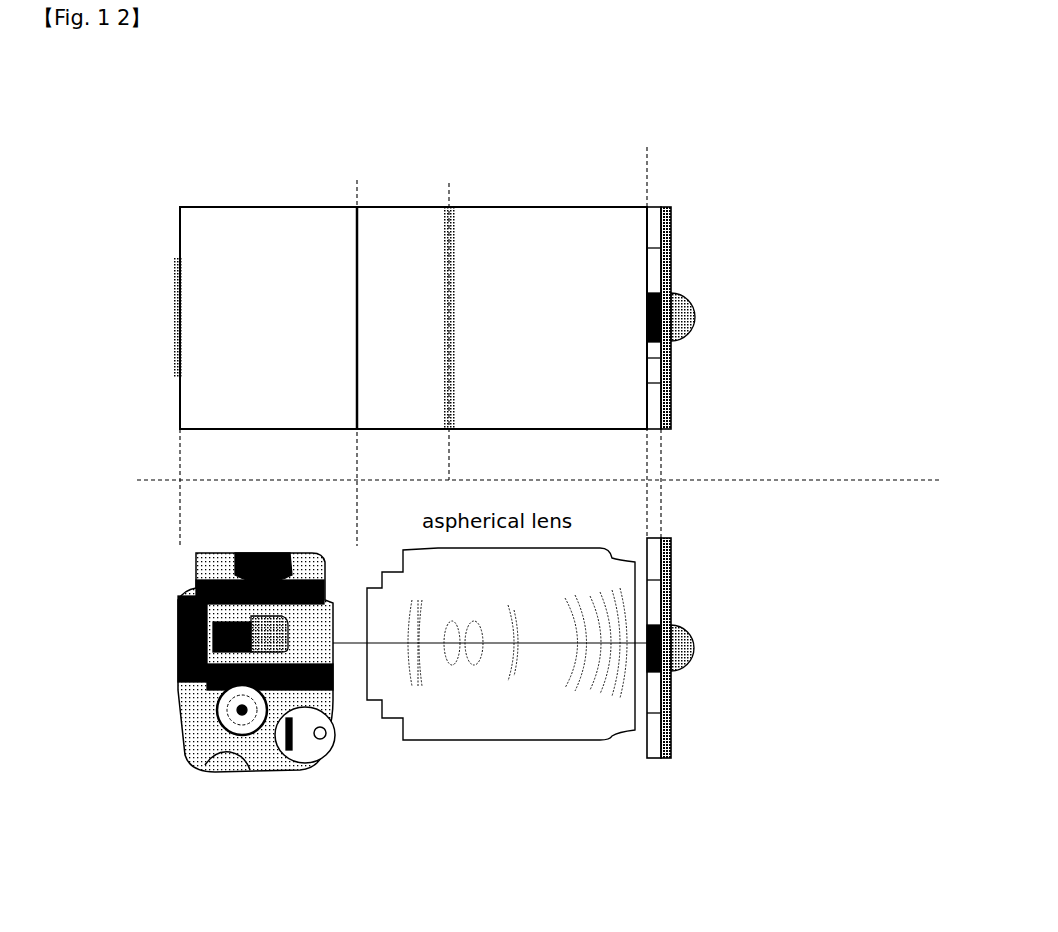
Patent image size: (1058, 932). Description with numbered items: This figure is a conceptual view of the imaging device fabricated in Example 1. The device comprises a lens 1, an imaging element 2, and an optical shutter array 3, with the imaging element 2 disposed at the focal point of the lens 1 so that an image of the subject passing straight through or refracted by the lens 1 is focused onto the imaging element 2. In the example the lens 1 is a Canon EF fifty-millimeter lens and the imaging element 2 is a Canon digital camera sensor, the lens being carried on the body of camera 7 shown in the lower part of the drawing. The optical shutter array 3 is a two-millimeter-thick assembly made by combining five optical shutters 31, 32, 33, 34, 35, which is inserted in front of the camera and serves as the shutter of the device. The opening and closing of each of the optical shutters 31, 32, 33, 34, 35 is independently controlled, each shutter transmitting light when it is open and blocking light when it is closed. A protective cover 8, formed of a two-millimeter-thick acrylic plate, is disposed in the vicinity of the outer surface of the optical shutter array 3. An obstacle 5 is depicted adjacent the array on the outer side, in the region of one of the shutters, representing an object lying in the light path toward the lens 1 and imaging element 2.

The lens 1 is at (453, 230).
The imaging element 2 is at (173, 312).
The optical shutter array 3 is at (785, 306).
The optical shutter 31 is at (655, 220).
The optical shutter 32 is at (655, 267).
The optical shutter 33 is at (667, 295).
The optical shutter 34 is at (650, 358).
The optical shutter 35 is at (653, 397).
The obstacle 5 is at (700, 313).
The body of camera 7 is at (187, 573).
The protective cover 8 is at (670, 417).